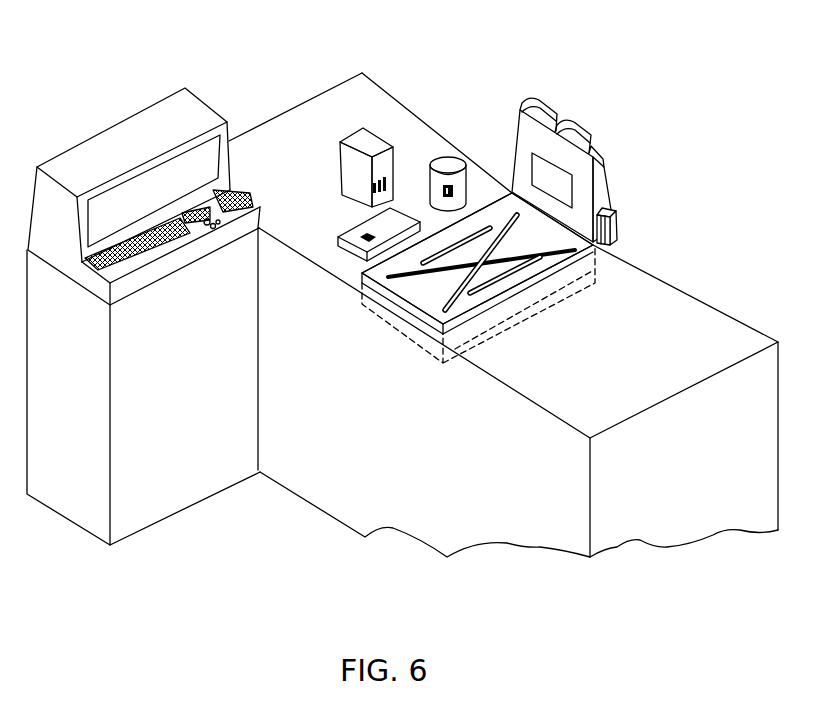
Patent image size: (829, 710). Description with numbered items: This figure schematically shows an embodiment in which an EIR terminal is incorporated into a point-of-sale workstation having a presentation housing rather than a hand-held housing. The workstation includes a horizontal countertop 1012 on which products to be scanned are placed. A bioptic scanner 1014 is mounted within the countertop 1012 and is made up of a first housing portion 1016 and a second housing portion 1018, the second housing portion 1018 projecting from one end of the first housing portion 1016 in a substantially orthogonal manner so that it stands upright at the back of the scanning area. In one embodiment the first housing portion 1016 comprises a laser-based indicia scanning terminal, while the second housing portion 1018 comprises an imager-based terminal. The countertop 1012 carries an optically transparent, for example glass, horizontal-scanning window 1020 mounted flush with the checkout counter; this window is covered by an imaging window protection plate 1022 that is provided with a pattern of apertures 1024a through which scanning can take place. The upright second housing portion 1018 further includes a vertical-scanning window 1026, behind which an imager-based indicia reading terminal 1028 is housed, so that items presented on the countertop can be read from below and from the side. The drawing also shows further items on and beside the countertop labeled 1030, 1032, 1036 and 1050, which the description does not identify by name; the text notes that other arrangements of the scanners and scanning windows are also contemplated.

The horizontal countertop 1012 is at (628, 399).
The bioptic scanner 1014 is at (533, 275).
The first housing portion 1016 is at (553, 243).
The second housing portion 1018 is at (589, 170).
The horizontal-scanning window 1020 is at (450, 302).
The imaging window protection plate 1022 is at (451, 329).
The apertures 1024a is at (458, 302).
The vertical-scanning window 1026 is at (644, 184).
The imager-based indicia reading terminal 1028 is at (562, 190).
The reader unit 1030 is at (322, 111).
The indicator 1032 is at (373, 187).
The sensor module 1036 is at (617, 225).
The drawer region 1050 is at (575, 282).